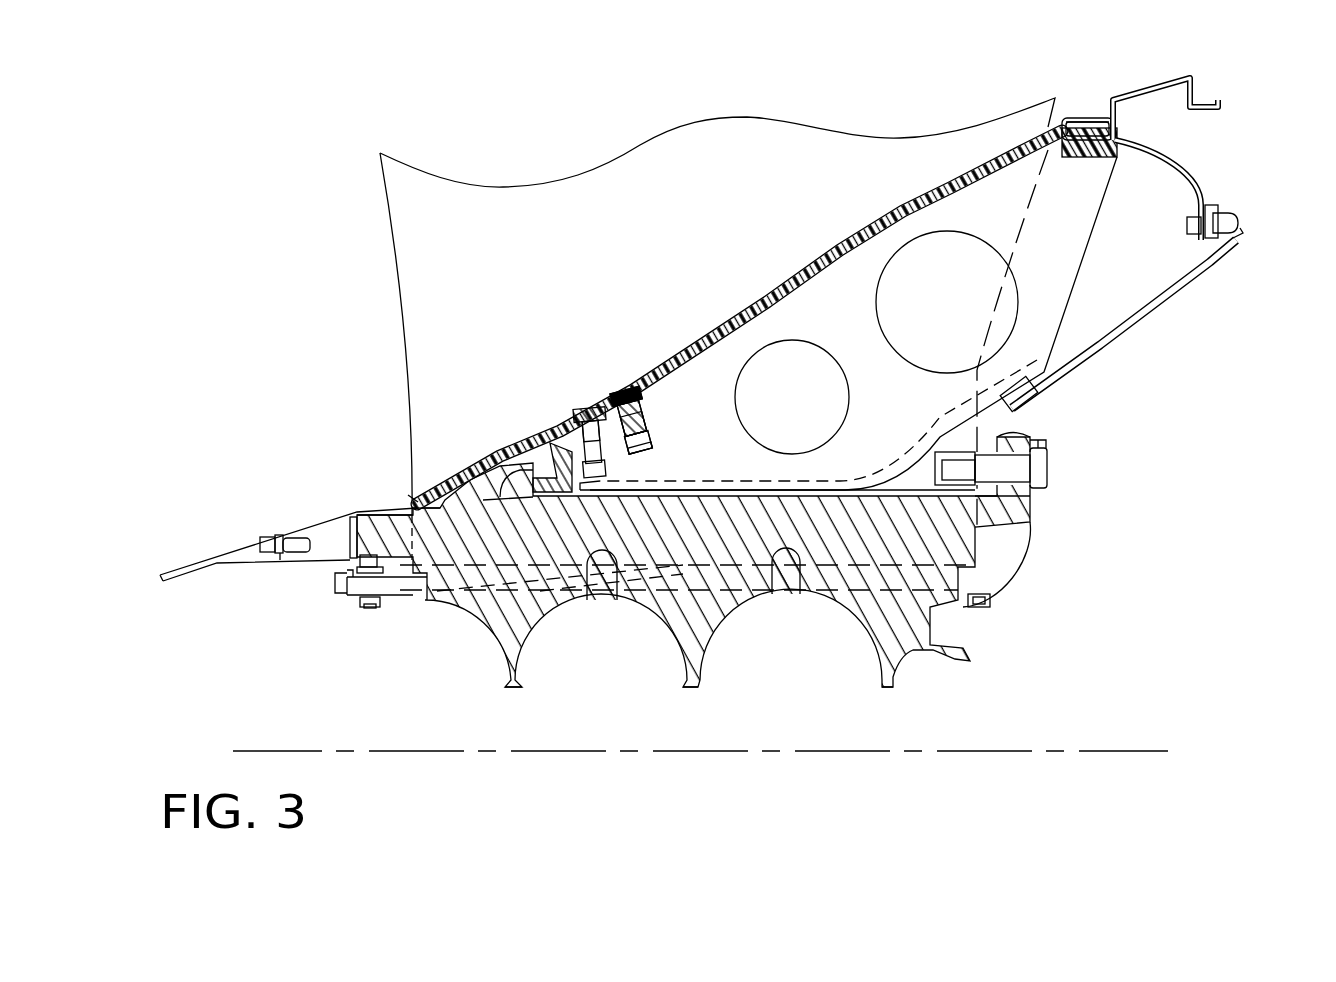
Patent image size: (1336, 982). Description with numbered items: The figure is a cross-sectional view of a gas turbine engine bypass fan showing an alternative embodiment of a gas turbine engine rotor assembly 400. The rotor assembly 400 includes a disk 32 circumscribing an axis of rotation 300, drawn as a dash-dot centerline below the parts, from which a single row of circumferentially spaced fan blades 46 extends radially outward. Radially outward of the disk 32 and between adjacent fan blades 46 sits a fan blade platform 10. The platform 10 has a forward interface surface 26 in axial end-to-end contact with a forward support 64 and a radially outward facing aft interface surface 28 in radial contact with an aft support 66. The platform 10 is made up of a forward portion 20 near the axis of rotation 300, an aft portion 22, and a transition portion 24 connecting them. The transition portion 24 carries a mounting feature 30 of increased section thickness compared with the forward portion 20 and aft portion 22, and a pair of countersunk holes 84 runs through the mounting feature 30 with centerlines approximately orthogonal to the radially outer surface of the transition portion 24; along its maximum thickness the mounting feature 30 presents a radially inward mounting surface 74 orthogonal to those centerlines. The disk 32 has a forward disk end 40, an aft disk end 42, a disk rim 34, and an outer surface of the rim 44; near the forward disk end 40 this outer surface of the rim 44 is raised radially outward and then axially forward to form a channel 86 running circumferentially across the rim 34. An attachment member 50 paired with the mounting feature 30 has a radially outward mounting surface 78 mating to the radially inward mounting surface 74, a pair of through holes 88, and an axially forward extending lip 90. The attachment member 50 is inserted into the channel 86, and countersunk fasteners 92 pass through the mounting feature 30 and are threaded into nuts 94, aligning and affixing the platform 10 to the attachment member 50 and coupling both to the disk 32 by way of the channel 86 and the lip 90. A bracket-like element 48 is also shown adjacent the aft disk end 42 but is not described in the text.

The fan blade platform 10 is at (1067, 118).
The forward portion 20 is at (420, 500).
The aft portion 22 is at (905, 205).
The transition portion 24 is at (590, 420).
The forward interface surface 26 is at (410, 497).
The aft interface surface 28 is at (1080, 137).
The mounting feature 30 is at (637, 398).
The disk 32 is at (725, 650).
The disk rim 34 is at (675, 546).
The forward disk end 40 is at (405, 590).
The aft disk end 42 is at (985, 607).
The outer surface of the rim 44 is at (883, 493).
The fan blades 46 is at (440, 255).
The bracket 48 is at (973, 557).
The attachment member 50 is at (552, 445).
The forward support 64 is at (340, 510).
The aft support 66 is at (1140, 90).
The radially inward mounting surface 74 is at (583, 440).
The radially outward mounting surface 78 is at (620, 455).
The countersunk holes 84 is at (648, 405).
The channel 86 is at (507, 444).
The through holes 88 is at (648, 422).
The axially forward extending lip 90 is at (533, 497).
The countersunk fasteners 92 is at (625, 405).
The nuts 94 is at (652, 440).
The axis of rotation 300 is at (300, 750).
The gas turbine engine rotor assembly 400 is at (325, 100).